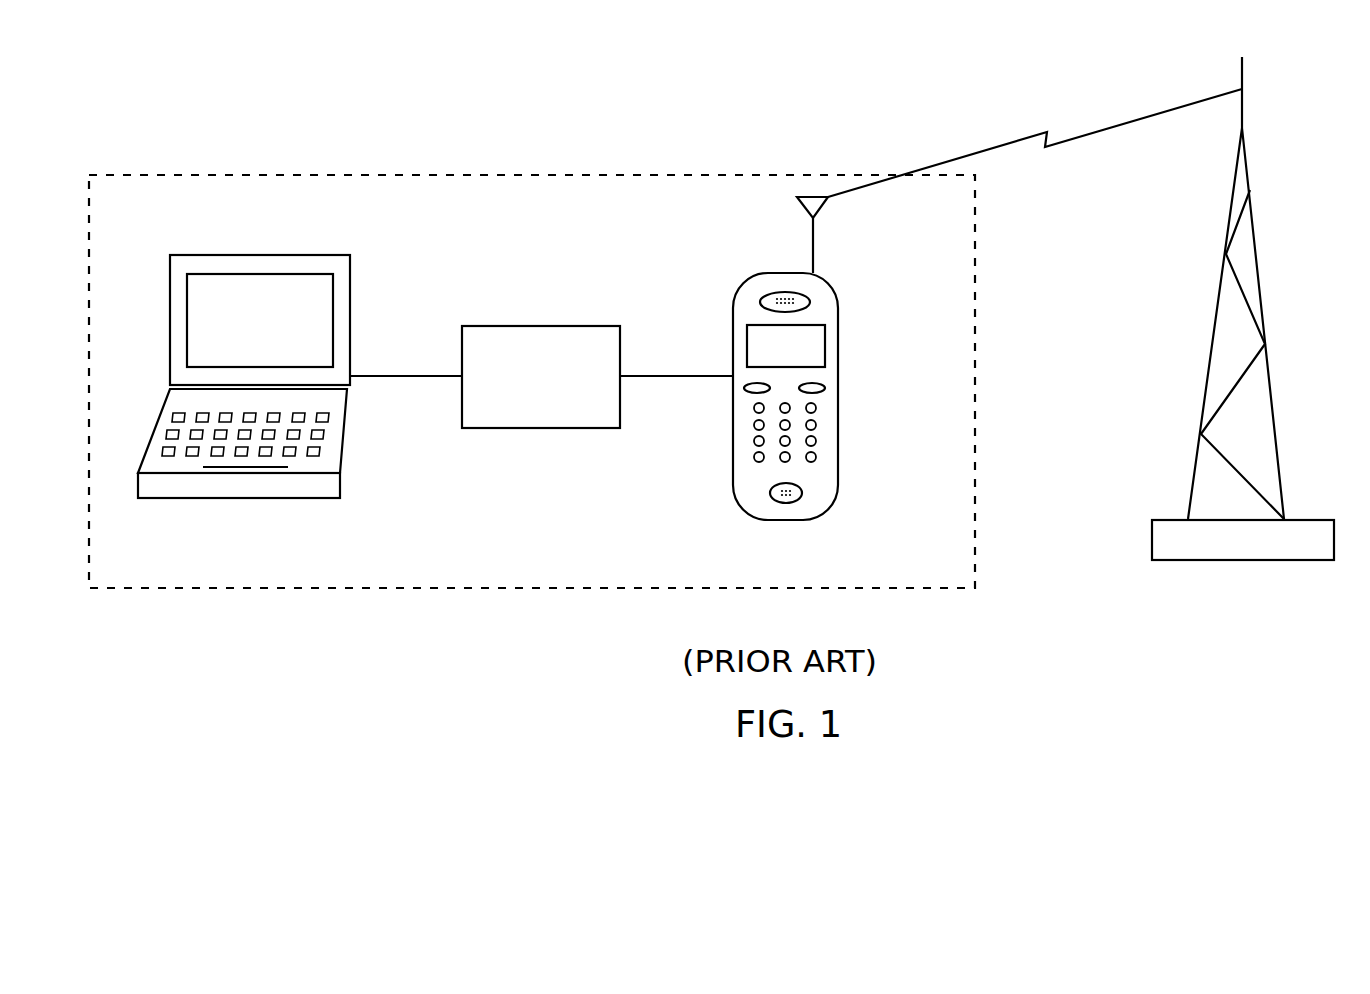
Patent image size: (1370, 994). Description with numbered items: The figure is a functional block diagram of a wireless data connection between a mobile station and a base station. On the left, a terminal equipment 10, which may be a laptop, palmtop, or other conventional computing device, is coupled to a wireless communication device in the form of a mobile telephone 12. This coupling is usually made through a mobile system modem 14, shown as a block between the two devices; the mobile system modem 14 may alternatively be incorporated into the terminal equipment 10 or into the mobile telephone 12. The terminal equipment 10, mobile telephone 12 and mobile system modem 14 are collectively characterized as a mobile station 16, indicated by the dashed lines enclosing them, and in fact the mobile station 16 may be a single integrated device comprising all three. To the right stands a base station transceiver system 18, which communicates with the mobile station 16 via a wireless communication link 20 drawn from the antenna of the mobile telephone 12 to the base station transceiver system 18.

The terminal equipment 10 is at (312, 254).
The mobile telephone 12 is at (835, 292).
The mobile system modem 14 is at (547, 325).
The mobile station 16 is at (548, 173).
The base station transceiver system 18 is at (1302, 516).
The wireless communication link 20 is at (1148, 113).